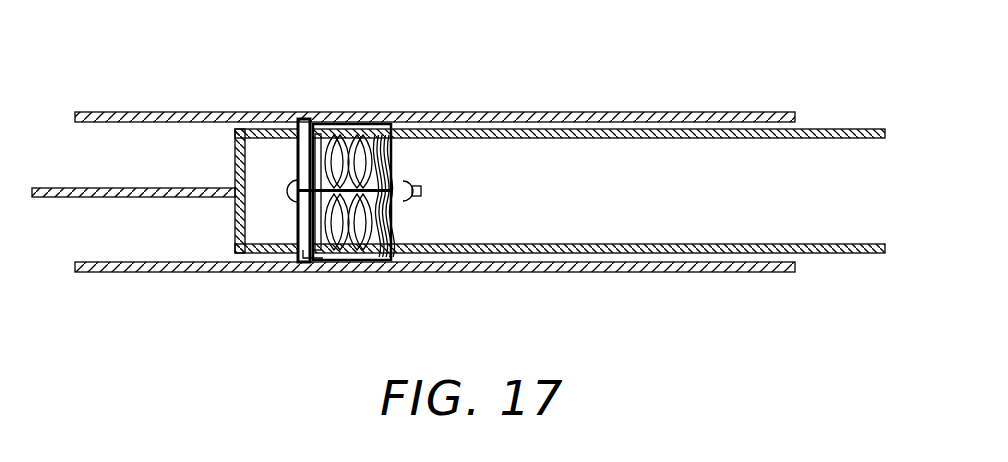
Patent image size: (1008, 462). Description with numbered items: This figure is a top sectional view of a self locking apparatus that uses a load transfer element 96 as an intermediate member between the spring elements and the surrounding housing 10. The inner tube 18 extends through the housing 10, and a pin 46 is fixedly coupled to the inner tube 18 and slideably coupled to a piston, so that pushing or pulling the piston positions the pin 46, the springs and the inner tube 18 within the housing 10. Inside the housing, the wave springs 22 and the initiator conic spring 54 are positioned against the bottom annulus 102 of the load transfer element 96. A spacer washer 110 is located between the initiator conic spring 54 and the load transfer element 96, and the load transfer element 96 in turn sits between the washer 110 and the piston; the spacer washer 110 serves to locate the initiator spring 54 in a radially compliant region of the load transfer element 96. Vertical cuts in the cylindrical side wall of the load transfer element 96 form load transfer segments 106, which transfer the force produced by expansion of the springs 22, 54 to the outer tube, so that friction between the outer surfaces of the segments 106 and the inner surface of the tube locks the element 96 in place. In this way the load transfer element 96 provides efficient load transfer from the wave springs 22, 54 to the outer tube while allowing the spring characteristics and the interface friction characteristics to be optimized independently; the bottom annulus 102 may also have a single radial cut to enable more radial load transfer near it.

The housing 10 is at (748, 112).
The inner tube 18 is at (838, 139).
The wave springs 22 is at (349, 135).
The pin 46 is at (417, 204).
The initiator conic spring 54 is at (322, 223).
The load transfer element 96 is at (316, 121).
The bottom annulus 102 is at (312, 150).
The load transfer segments 106 is at (378, 136).
The spacer washer 110 is at (325, 261).